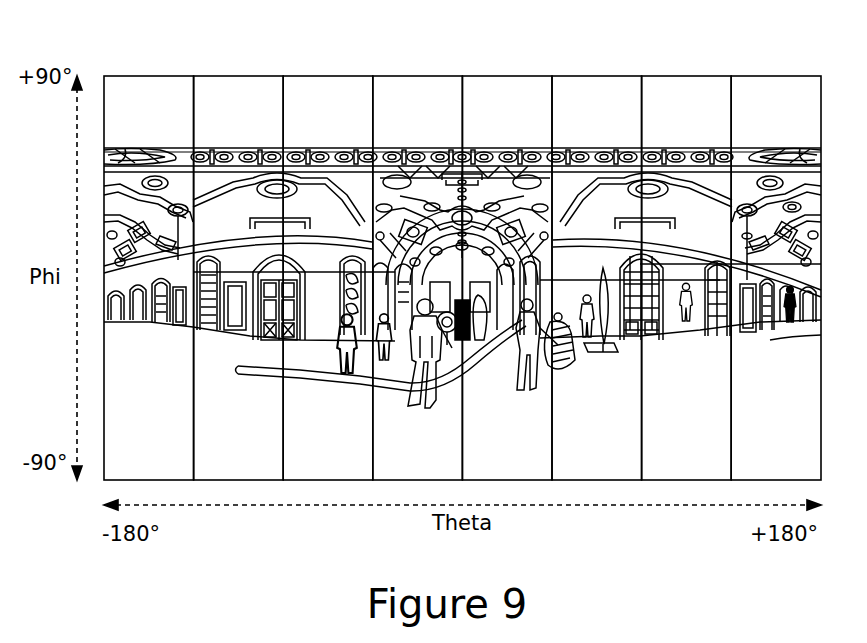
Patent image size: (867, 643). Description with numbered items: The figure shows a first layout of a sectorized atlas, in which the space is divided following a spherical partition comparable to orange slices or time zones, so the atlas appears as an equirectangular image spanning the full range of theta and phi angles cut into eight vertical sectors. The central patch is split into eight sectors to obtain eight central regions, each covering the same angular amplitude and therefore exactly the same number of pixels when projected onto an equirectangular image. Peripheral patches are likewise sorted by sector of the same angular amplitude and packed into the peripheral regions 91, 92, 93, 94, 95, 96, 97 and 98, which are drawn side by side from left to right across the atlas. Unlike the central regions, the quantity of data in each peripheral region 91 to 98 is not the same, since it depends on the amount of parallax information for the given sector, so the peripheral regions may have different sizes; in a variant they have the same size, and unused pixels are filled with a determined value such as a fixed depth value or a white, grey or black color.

The peripheral region 91 is at (147, 93).
The peripheral region 92 is at (237, 93).
The peripheral region 93 is at (326, 93).
The peripheral region 94 is at (418, 93).
The peripheral region 95 is at (507, 93).
The peripheral region 96 is at (596, 93).
The peripheral region 97 is at (685, 93).
The peripheral region 98 is at (774, 93).